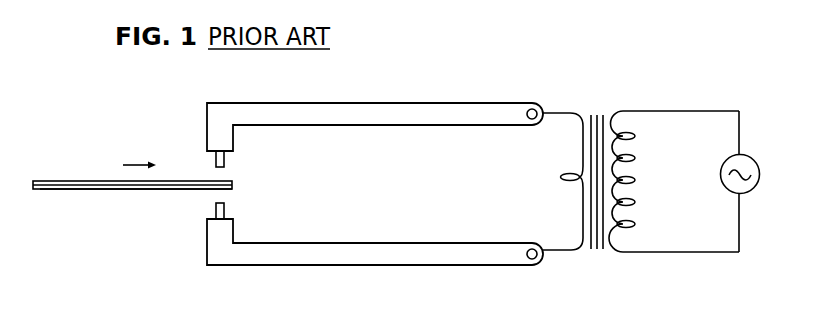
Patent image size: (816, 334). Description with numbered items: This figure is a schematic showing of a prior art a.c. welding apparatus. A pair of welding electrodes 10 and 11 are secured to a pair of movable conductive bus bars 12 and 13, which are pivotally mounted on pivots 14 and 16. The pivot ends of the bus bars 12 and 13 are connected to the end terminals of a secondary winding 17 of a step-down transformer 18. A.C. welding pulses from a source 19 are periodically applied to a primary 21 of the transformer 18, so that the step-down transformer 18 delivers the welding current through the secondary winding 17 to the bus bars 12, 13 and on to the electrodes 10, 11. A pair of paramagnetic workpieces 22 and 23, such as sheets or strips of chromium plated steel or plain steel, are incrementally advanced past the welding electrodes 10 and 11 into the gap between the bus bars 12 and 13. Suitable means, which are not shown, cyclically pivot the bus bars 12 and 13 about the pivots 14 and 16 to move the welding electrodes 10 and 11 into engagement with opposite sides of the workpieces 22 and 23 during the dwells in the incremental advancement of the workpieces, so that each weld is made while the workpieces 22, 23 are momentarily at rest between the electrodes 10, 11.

The welding electrode 10 is at (226, 158).
The welding electrode 11 is at (226, 208).
The movable conductive bus bar 12 is at (405, 126).
The movable conductive bus bar 13 is at (415, 243).
The pivot 14 is at (526, 105).
The pivot 16 is at (530, 263).
The secondary winding 17 is at (563, 180).
The step-down transformer 18 is at (603, 103).
The source 19 is at (722, 186).
The primary 21 is at (633, 181).
The paramagnetic workpiece 22 is at (82, 180).
The paramagnetic workpiece 23 is at (115, 189).